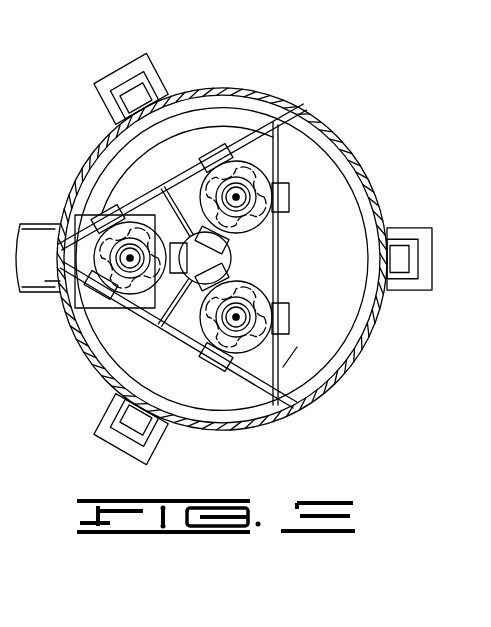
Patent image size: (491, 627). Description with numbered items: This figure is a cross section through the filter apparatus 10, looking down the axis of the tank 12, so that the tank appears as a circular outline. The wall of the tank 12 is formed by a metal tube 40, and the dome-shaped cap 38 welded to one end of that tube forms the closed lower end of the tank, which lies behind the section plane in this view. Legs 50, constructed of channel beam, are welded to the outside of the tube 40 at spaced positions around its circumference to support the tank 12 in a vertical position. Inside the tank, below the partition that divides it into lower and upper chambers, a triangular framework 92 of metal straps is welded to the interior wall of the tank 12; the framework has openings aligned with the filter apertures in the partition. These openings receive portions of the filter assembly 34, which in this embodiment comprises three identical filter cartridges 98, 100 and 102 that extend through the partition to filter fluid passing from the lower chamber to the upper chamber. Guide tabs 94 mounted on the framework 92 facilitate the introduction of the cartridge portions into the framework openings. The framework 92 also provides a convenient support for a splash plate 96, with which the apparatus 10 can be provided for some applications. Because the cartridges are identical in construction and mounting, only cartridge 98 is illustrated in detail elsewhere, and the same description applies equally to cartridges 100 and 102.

The filter apparatus 10 is at (291, 77).
The tank 12 is at (200, 79).
The filter assembly 34 is at (280, 166).
The dome-shaped cap 38 is at (331, 247).
The metal tube 40 is at (278, 425).
The legs 50 is at (123, 76).
The triangular framework 92 is at (244, 389).
The guide tabs 94 is at (289, 197).
The splash plate 96 is at (143, 303).
The filter cartridge 98 is at (97, 276).
The filter cartridge 100 is at (306, 391).
The filter cartridge 102 is at (269, 154).